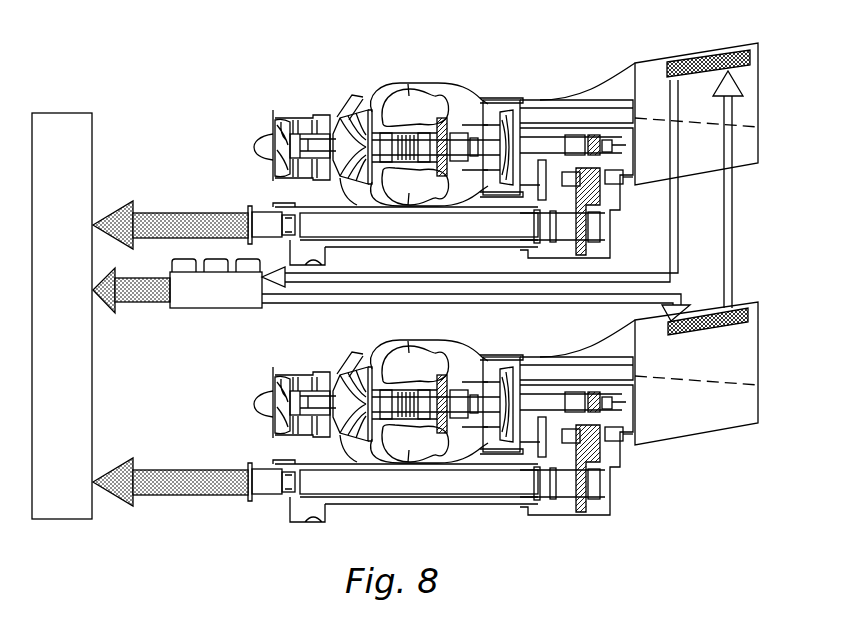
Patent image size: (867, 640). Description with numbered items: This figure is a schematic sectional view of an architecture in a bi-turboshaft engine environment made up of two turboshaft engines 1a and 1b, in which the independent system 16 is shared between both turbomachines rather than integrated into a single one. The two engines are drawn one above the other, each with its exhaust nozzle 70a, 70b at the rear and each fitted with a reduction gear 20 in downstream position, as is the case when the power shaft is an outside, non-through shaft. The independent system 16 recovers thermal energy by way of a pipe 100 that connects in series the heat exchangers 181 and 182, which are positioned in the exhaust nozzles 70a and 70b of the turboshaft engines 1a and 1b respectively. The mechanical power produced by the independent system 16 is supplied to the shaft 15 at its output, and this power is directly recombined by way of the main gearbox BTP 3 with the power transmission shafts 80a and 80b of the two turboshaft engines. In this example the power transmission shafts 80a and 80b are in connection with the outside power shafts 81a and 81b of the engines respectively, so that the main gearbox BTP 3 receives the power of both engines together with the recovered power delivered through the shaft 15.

The main gearbox BTP 3 is at (67, 132).
The turboshaft engine 1a is at (458, 78).
The turboshaft engine 1b is at (285, 362).
The reduction gear 20 is at (605, 202).
The outside power shaft 81a is at (443, 223).
The outside power shaft 81b is at (455, 480).
The power transmission shaft 80a is at (180, 223).
The power transmission shaft 80b is at (183, 483).
The shaft 15 is at (143, 305).
The independent system 16 is at (216, 283).
The pipe 100 is at (727, 217).
The exhaust nozzle 70a is at (720, 153).
The exhaust nozzle 70b is at (705, 413).
The heat exchanger 181 is at (720, 60).
The heat exchanger 182 is at (720, 324).